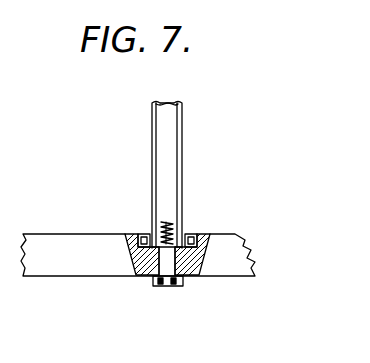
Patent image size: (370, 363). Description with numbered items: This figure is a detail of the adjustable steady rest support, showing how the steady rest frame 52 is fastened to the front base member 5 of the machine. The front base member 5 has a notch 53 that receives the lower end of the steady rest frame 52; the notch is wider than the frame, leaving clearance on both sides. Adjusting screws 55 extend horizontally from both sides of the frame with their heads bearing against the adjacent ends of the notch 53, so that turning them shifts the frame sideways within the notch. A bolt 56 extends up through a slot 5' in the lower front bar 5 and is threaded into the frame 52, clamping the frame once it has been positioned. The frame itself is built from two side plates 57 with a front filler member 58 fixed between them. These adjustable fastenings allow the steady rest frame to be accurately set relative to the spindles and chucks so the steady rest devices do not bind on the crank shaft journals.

The front base member 5 is at (138, 279).
The slot 5' is at (184, 297).
The steady rest frame 52 is at (167, 192).
The notch 53 is at (197, 274).
The adjusting screws 55 is at (147, 238).
The bolt 56 is at (158, 287).
The side plates 57 is at (152, 137).
The front filler member 58 is at (166, 103).